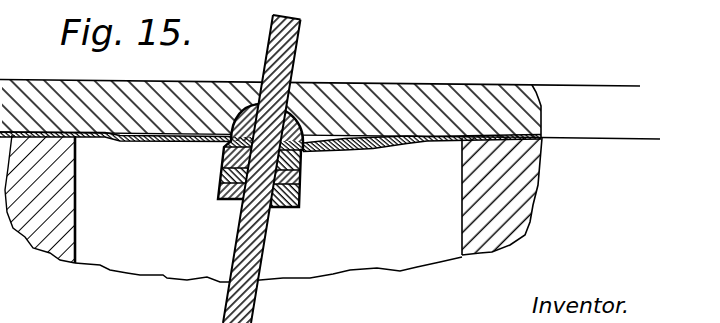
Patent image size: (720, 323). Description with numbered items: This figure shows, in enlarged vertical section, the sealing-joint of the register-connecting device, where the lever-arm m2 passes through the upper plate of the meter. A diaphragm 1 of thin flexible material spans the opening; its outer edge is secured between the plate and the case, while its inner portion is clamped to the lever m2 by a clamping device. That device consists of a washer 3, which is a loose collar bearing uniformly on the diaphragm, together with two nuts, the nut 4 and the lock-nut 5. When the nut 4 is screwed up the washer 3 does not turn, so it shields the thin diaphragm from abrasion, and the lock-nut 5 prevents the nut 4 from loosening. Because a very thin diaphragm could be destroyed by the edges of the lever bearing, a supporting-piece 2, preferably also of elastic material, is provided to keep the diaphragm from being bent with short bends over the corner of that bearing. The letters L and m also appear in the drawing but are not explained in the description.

The diaphragm 1 is at (270, 142).
The supporting-piece 2 is at (330, 110).
The washer 3 is at (292, 160).
The nut 4 is at (292, 177).
The lock-nut 5 is at (291, 195).
The lever L is at (458, 196).
The rod head m is at (261, 154).
The lever-arm m2 is at (262, 169).